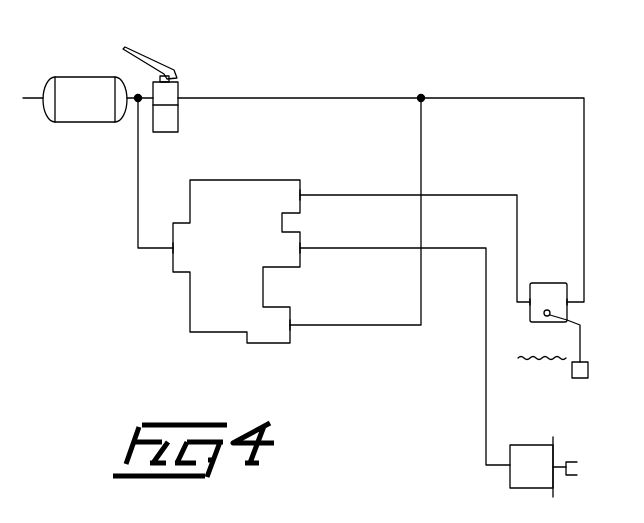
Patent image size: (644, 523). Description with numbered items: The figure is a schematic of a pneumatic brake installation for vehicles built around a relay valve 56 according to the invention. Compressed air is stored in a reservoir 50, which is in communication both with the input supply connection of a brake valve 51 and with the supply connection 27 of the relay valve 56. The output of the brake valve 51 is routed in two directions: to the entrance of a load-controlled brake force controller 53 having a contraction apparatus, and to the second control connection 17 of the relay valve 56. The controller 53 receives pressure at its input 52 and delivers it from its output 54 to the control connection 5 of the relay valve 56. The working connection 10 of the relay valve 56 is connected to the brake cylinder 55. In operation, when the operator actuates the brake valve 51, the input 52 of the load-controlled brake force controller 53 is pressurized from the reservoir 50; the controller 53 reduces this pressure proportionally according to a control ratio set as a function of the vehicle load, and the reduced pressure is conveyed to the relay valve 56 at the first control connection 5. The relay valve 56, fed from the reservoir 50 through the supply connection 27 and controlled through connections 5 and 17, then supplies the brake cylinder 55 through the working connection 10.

The reservoir 50 is at (86, 103).
The brake valve 51 is at (170, 93).
The relay valve 56 is at (208, 333).
The control connection 5 is at (282, 192).
The working connection 10 is at (288, 255).
The second control connection 17 is at (273, 325).
The supply connection 27 is at (187, 253).
The load-controlled brake force controller 53 is at (552, 295).
The input 52 is at (570, 303).
The output 54 is at (527, 303).
The brake cylinder 55 is at (532, 458).